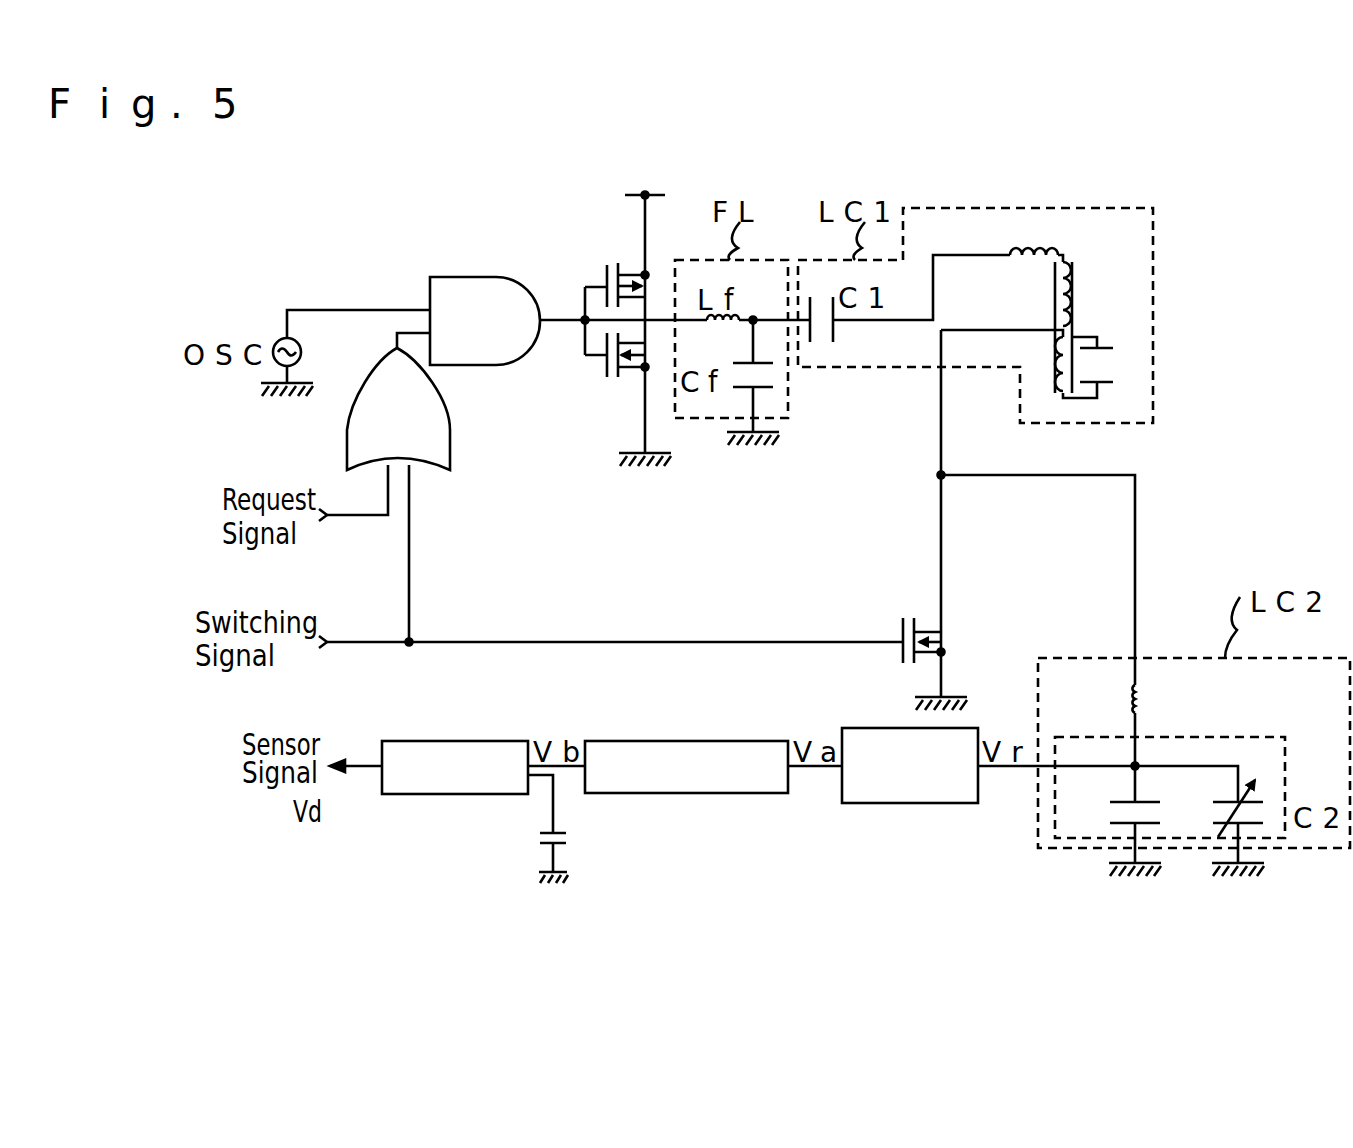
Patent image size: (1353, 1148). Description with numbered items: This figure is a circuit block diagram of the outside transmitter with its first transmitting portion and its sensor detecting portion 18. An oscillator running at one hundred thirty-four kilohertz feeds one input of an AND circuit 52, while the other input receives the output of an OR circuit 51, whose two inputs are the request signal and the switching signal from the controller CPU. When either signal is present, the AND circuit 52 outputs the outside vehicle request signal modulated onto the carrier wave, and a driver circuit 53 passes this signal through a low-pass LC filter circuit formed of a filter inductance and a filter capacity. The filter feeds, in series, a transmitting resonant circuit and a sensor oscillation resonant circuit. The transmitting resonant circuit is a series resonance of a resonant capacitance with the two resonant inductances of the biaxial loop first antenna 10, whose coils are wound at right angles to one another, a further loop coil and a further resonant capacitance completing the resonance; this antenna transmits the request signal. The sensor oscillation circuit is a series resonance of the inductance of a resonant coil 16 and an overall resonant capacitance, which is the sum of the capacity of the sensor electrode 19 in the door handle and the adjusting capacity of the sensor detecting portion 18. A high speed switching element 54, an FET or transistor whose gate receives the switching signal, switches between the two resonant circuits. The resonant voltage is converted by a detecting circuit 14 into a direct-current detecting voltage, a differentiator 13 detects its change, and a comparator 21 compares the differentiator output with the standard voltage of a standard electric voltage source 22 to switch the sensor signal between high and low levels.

The first antenna 10 is at (1094, 243).
The differentiator 13 is at (628, 741).
The detecting circuit 14 is at (866, 728).
The resonant coil 16 is at (1125, 700).
The sensor detecting portion 18 is at (1125, 800).
The sensor electrode 19 is at (1232, 800).
The comparator 21 is at (428, 741).
The standard electric voltage source 22 is at (560, 833).
The OR circuit 51 is at (450, 445).
The AND circuit 52 is at (455, 277).
The driver circuit 53 is at (604, 260).
The high speed switching element 54 is at (903, 632).